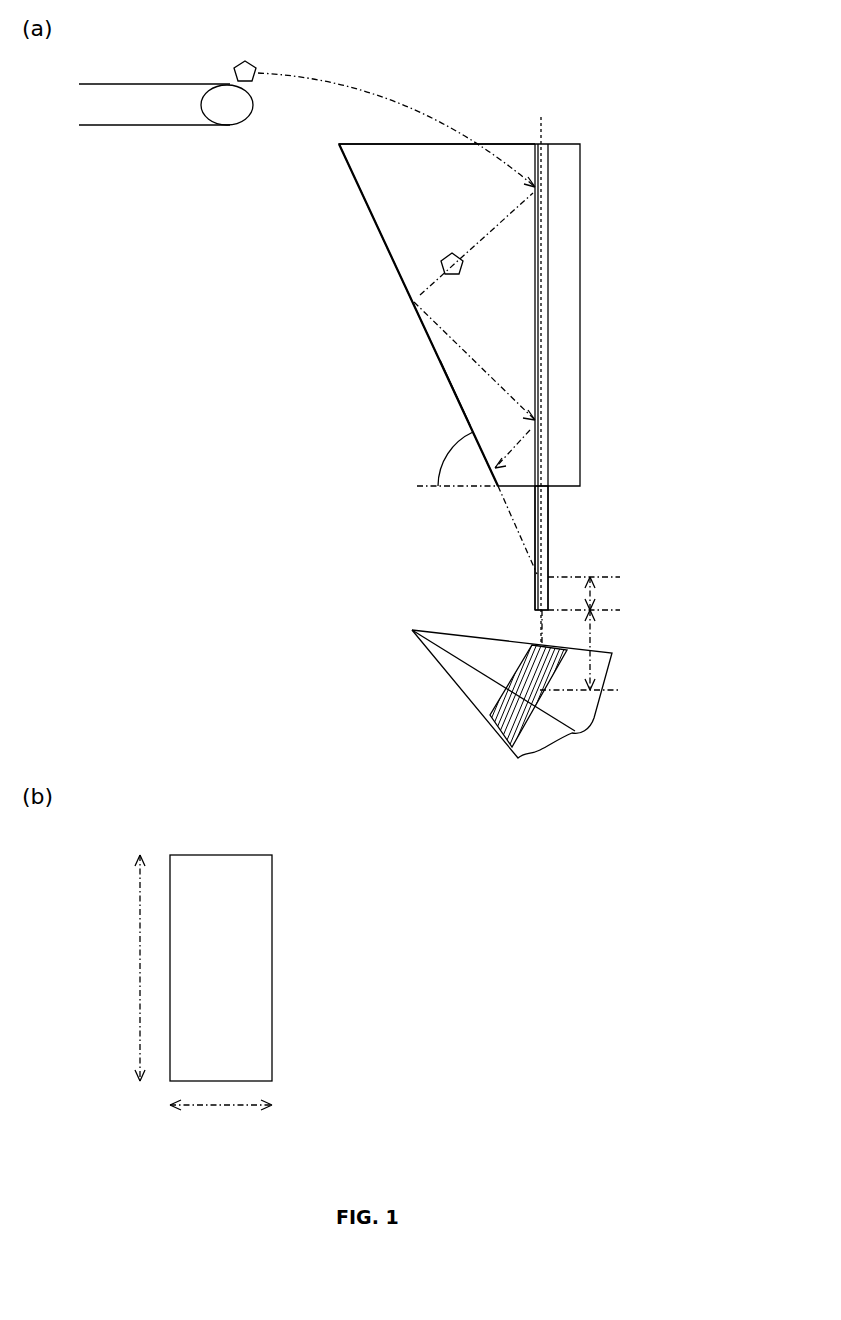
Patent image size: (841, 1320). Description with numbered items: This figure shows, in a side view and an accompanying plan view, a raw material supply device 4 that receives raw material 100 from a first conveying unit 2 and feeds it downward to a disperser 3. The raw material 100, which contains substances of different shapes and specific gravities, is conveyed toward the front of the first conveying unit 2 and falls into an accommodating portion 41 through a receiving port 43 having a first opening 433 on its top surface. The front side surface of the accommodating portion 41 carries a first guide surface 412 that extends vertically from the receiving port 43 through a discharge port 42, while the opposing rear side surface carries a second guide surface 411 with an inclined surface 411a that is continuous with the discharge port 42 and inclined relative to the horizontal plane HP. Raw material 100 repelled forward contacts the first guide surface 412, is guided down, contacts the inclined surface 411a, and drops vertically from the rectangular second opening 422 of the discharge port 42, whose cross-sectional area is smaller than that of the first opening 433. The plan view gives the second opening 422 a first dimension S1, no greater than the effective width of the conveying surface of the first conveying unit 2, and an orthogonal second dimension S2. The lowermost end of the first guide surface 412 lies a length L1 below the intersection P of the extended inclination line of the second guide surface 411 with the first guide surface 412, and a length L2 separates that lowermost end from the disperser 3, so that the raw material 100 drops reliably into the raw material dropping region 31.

The first conveying unit 2 is at (110, 112).
The raw material 100 is at (253, 81).
The disperser 3 is at (465, 678).
The raw material dropping region 31 is at (492, 708).
The raw material supply device 4 is at (498, 357).
The accommodating portion 41 is at (583, 267).
The second guide surface 411 is at (410, 300).
The inclined surface 411a is at (455, 395).
The first guide surface 412 is at (545, 347).
The discharge port 42 is at (547, 458).
The second opening 422 is at (548, 490).
The receiving port 43 is at (510, 143).
The first opening 433 is at (403, 143).
The horizontal plane HP is at (438, 488).
The intersection P is at (548, 575).
The length L1 is at (600, 594).
The length L2 is at (600, 631).
The first dimension S1 is at (113, 968).
The second dimension S2 is at (221, 1133).